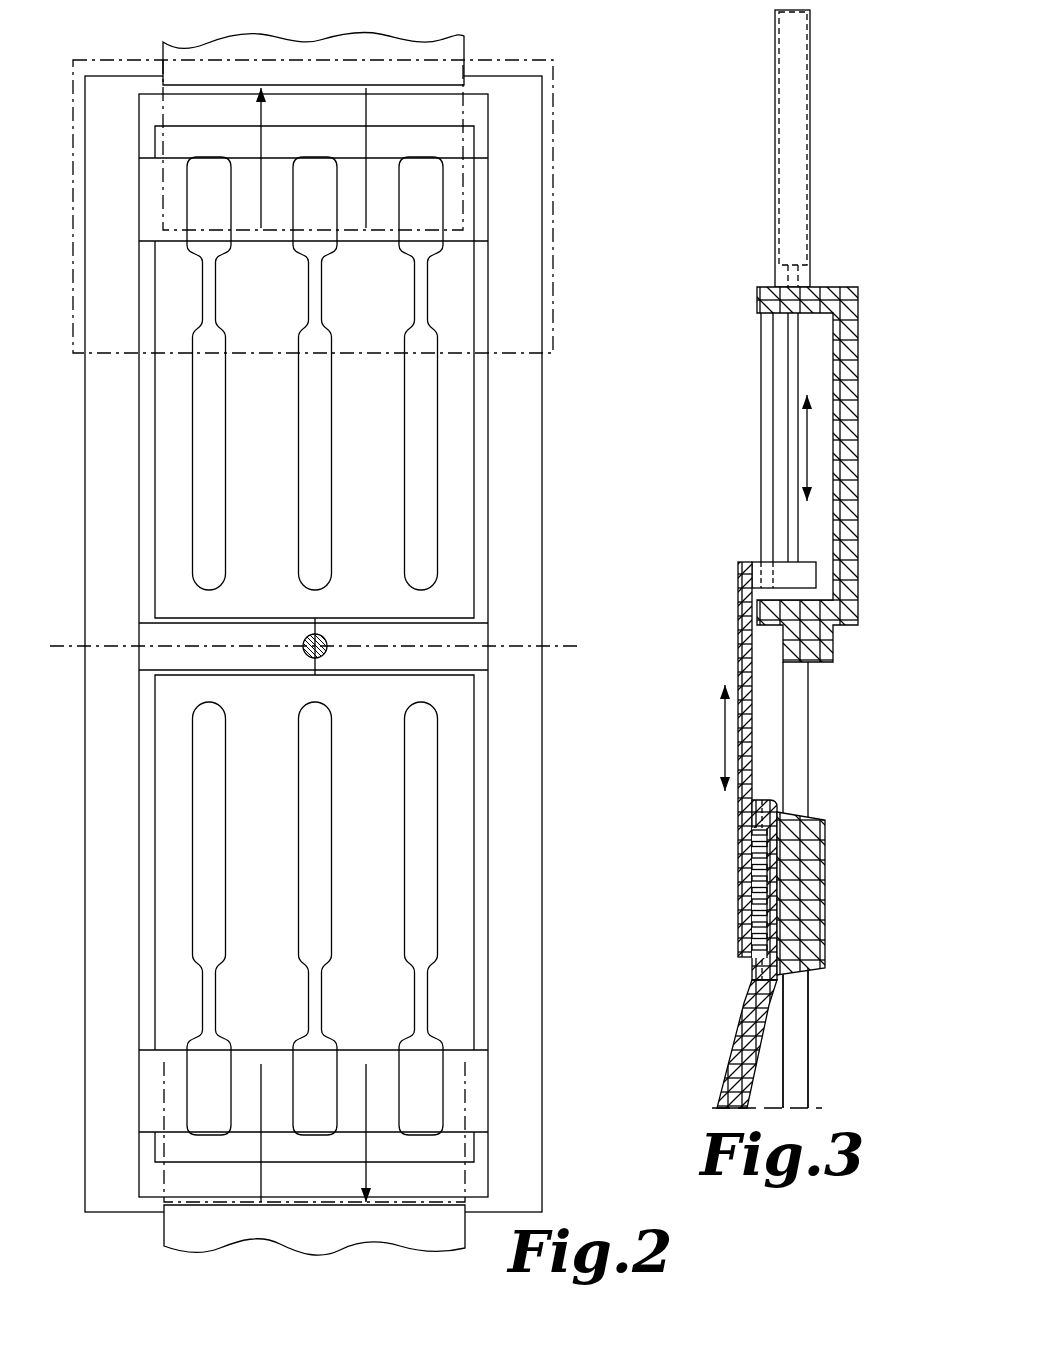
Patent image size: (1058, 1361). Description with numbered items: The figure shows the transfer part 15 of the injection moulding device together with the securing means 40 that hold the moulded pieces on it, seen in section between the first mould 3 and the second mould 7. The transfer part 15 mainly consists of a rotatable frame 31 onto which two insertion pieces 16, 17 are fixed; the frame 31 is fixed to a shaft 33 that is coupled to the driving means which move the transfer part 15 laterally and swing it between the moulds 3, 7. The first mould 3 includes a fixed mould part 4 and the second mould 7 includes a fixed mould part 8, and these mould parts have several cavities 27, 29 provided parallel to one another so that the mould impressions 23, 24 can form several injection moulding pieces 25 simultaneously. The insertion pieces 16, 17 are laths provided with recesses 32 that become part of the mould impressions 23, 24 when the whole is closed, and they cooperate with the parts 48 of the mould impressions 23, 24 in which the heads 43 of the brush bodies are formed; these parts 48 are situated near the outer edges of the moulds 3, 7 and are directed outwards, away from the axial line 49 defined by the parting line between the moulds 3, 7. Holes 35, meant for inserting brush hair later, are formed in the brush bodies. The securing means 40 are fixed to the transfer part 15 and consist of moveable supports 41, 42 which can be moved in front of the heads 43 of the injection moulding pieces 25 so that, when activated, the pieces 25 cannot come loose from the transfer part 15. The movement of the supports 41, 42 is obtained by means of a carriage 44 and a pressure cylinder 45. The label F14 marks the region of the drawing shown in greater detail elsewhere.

In FIG. 2, the first mould 3 is at (324, 918).
In FIG. 2, the fixed mould part 4 is at (458, 898).
In FIG. 2, the second mould 7 is at (334, 309).
In FIG. 2, the fixed mould part 8 is at (458, 460).
In FIG. 2, the transfer part 15 is at (391, 159).
In FIG. 3, the transfer part 15 is at (848, 770).
In FIG. 2, the insertion piece 16 is at (478, 1090).
In FIG. 3, the insertion piece 16 is at (808, 884).
In FIG. 2, the insertion piece 17 is at (480, 213).
In FIG. 2, the mould impression 23 is at (228, 779).
In FIG. 2, the mould impression 24 is at (228, 550).
In FIG. 3, the injection moulding piece 25 is at (745, 1023).
In FIG. 2, the cavity 27 is at (324, 862).
In FIG. 2, the cavity 29 is at (328, 436).
In FIG. 2, the rotatable frame 31 is at (518, 945).
In FIG. 3, the rotatable frame 31 is at (800, 1030).
In FIG. 2, the recess 32 is at (310, 168).
In FIG. 2, the shaft 33 is at (306, 638).
In FIG. 3, the hole 35 is at (757, 933).
In FIG. 2, the securing means 40 is at (350, 627).
In FIG. 3, the securing means 40 is at (715, 465).
In FIG. 2, the moveable support 41 is at (175, 1226).
In FIG. 2, the moveable support 42 is at (455, 72).
In FIG. 3, the moveable support 42 is at (740, 648).
In FIG. 3, the head 43 is at (721, 887).
In FIG. 3, the carriage 44 is at (757, 572).
In FIG. 3, the pressure cylinder 45 is at (785, 143).
In FIG. 2, the part of the mould impression 48 is at (324, 575).
In FIG. 2, the axial line 49 is at (582, 647).
In FIG. 2, the detail region F14 is at (553, 305).